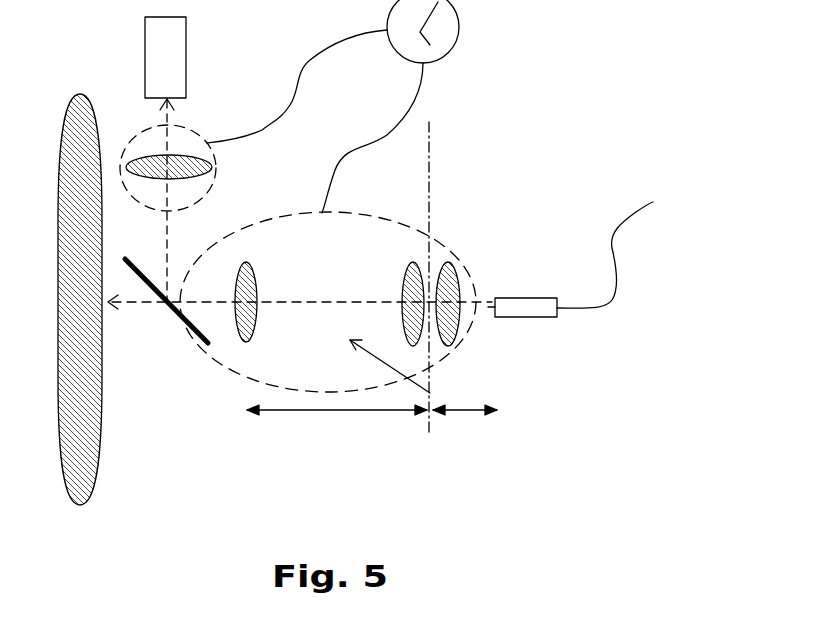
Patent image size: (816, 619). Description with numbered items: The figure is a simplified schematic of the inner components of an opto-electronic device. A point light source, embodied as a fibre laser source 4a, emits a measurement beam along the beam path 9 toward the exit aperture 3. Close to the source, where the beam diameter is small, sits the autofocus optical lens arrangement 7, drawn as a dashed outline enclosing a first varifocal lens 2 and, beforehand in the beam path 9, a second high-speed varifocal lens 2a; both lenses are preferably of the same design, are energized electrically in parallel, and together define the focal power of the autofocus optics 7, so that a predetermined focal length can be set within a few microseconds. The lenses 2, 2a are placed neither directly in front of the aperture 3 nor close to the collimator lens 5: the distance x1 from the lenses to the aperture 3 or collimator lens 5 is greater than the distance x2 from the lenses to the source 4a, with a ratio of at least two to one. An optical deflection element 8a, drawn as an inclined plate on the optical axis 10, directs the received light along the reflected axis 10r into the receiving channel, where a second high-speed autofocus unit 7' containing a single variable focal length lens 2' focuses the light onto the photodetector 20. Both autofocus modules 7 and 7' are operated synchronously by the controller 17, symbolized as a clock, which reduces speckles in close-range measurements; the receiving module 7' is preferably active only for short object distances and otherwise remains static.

The first varifocal lens 2 is at (385, 289).
The second high-speed varifocal lens 2a is at (491, 286).
The variable focal length lens 2' is at (199, 167).
The exit aperture 3 is at (97, 299).
The fibre laser source 4a is at (570, 279).
The collimator lens 5 is at (256, 322).
The autofocus optical lens arrangement 7 is at (328, 290).
The high-speed autofocus unit 7' is at (186, 151).
The optical deflection element 8a is at (168, 303).
The beam path 9 is at (406, 371).
The optical axis 10 is at (281, 302).
The reflected optical axis 10r is at (217, 200).
The controller 17 is at (450, 50).
The photodetector 20 is at (180, 48).
The distance x1 is at (337, 428).
The distance x2 is at (465, 428).